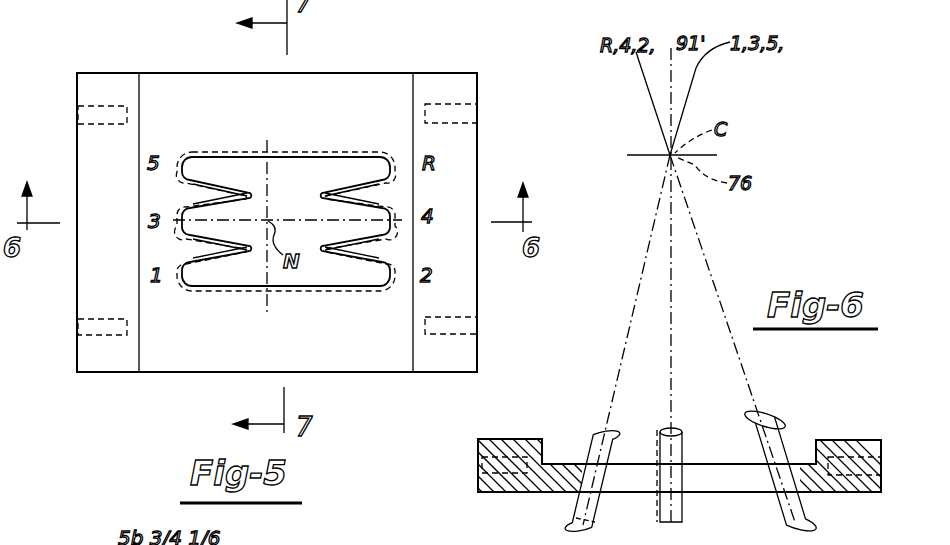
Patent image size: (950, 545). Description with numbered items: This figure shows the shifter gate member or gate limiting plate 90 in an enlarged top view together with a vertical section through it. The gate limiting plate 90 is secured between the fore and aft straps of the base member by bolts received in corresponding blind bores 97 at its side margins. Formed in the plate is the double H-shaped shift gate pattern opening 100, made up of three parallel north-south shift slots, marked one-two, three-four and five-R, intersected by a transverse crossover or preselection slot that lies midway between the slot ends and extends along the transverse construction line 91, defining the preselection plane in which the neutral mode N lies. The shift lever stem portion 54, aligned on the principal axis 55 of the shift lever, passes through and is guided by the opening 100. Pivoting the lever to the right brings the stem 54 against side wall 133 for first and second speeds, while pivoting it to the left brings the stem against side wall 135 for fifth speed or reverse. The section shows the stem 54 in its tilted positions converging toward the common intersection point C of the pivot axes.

In FIG. 5, the gate limiting plate 90 is at (484, 95).
In FIG. 6, the gate limiting plate 90 is at (846, 432).
In FIG. 5, the blind bores 97 is at (100, 109).
In FIG. 6, the blind bores 97 is at (495, 466).
In FIG. 5, the transverse construction line 91 is at (262, 298).
In FIG. 6, the transverse construction line 91 is at (675, 39).
In FIG. 5, the opening 100 is at (270, 166).
In FIG. 5, the side wall 135 is at (238, 154).
In FIG. 5, the side wall 133 is at (326, 288).
In FIG. 6, the stem portion 54 is at (592, 442).
In FIG. 6, the principal axis 55 is at (740, 544).